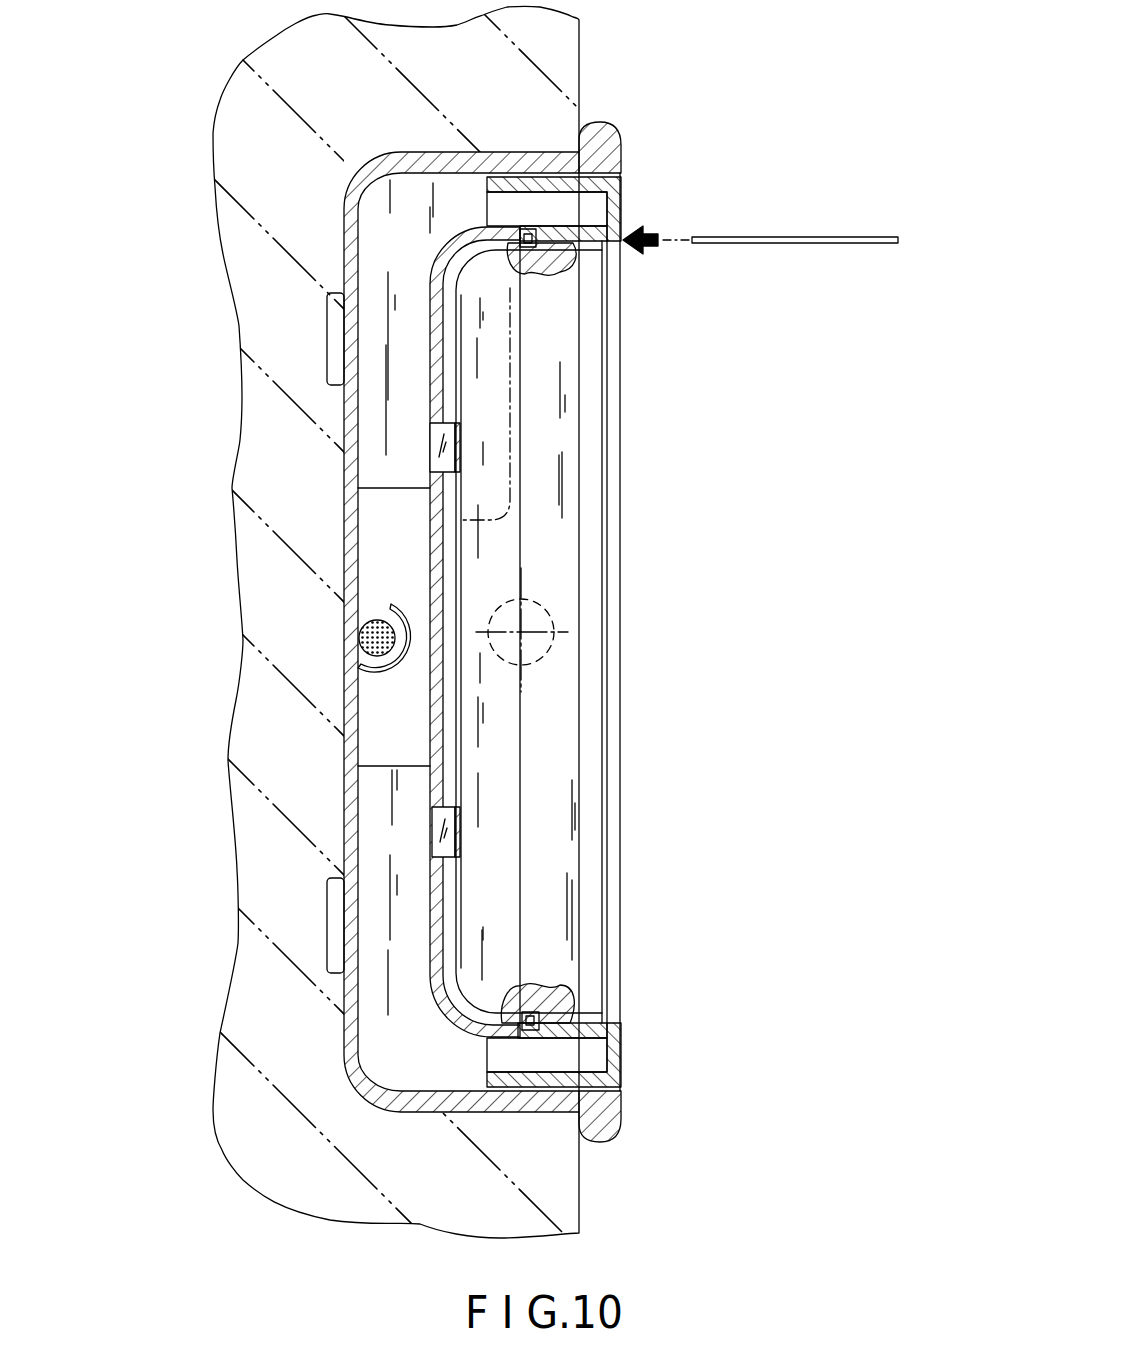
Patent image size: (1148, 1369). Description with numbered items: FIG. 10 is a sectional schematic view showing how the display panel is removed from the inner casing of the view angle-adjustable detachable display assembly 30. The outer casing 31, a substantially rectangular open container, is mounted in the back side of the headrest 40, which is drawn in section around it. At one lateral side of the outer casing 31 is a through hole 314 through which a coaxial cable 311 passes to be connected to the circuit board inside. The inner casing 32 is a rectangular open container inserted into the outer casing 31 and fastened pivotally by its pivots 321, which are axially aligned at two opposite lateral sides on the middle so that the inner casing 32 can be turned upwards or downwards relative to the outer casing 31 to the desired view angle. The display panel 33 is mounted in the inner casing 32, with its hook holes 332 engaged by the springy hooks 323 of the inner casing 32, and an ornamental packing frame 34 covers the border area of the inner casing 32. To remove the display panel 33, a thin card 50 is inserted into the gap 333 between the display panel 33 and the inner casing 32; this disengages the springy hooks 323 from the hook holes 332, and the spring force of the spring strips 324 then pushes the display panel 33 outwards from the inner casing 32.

The headrest 40 is at (565, 62).
The view angle-adjustable detachable display assembly 30 is at (662, 697).
The outer casing 31 is at (343, 251).
The coaxial cable 311 is at (358, 640).
The through hole 314 is at (380, 702).
The inner casing 32 is at (505, 262).
The pivot 321 is at (560, 632).
The springy hook 323 is at (606, 184).
The spring strip 324 is at (460, 438).
The display panel 33 is at (580, 552).
The hook hole 332 is at (538, 240).
The gap 333 is at (588, 236).
The ornamental packing frame 34 is at (608, 1050).
The thin card 50 is at (800, 240).